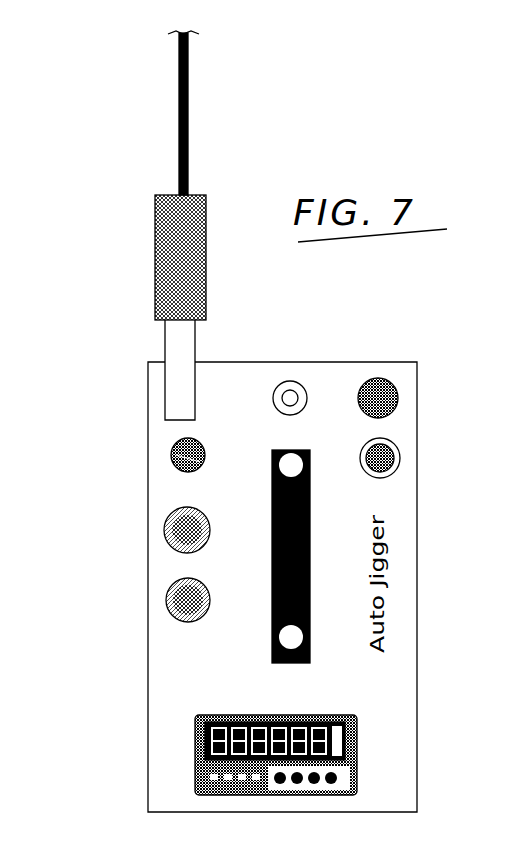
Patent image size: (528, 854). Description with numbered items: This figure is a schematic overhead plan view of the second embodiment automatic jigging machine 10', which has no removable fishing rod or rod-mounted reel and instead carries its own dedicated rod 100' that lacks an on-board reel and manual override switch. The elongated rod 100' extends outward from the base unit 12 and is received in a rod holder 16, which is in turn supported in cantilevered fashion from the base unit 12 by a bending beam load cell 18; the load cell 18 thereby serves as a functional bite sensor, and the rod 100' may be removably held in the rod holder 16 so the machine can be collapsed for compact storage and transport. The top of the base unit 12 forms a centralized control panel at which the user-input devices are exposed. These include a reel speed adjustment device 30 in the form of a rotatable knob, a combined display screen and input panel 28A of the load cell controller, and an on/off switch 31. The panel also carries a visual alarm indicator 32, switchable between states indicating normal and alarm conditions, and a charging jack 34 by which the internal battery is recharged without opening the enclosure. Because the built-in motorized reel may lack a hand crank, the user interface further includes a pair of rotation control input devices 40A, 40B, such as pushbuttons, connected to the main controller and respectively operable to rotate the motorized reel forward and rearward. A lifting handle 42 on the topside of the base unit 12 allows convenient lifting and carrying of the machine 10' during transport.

The dedicated rod 100' is at (226, 113).
The rod holder 16 is at (203, 217).
The bending beam load cell 18 is at (190, 346).
The base unit 12 is at (178, 673).
The second embodiment automatic jigging machine 10' is at (486, 291).
The charging jack 34 is at (297, 386).
The visual alarm indicator 32 is at (384, 396).
The on/off switch 31 is at (386, 457).
The reel speed adjustment device 30 is at (174, 463).
The rotation control input device 40A is at (190, 533).
The rotation control input device 40B is at (196, 604).
The lifting handle 42 is at (272, 618).
The combined display screen and input panel 28A is at (194, 758).